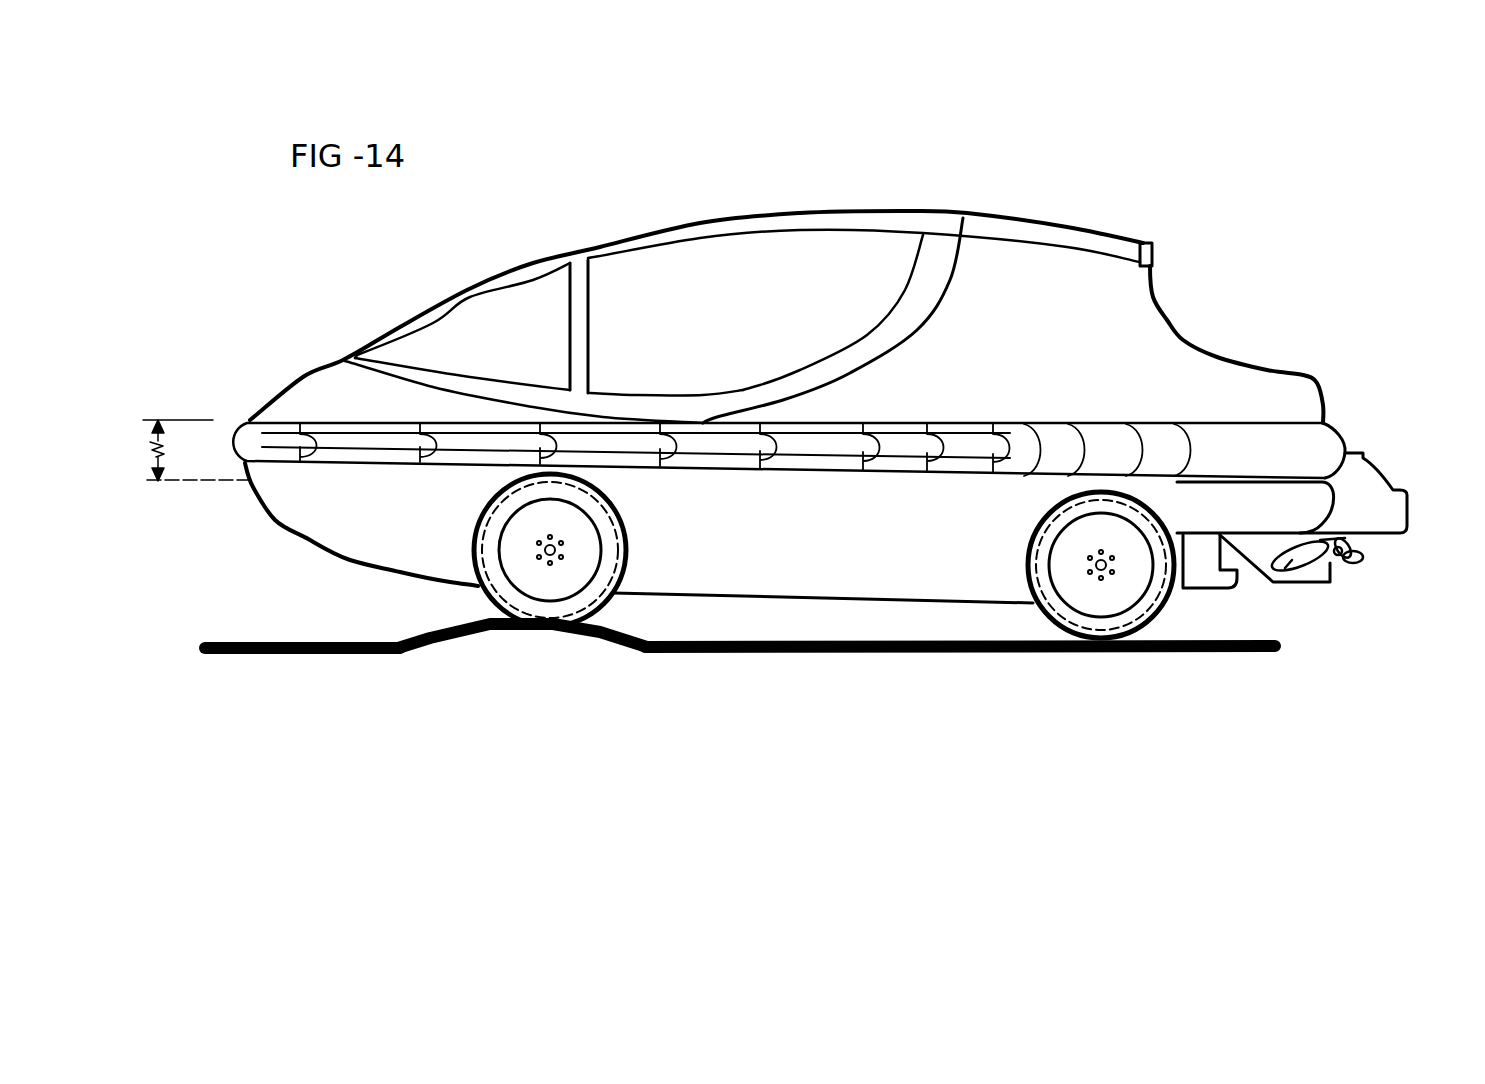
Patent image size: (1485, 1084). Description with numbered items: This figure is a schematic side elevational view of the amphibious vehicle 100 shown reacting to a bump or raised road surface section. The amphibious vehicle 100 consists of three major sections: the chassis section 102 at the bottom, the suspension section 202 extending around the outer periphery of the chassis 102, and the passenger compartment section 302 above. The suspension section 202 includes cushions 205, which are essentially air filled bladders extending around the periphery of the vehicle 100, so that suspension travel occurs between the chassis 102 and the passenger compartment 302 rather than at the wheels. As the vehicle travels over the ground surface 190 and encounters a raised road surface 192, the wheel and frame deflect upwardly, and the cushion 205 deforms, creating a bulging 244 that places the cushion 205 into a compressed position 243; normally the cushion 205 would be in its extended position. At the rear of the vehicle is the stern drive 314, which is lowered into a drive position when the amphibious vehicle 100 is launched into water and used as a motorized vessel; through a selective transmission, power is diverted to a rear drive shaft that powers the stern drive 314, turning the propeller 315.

The amphibious vehicle 100 is at (1135, 76).
The chassis section 102 is at (968, 515).
The ground surface 190 is at (790, 653).
The raised road surface 192 is at (500, 633).
The suspension section 202 is at (1310, 450).
The cushion 205 is at (1163, 443).
The compressed position 243 is at (307, 443).
The bulging 244 is at (547, 447).
The passenger compartment section 302 is at (757, 278).
The stern drive 314 is at (1277, 585).
The propeller 315 is at (1350, 570).